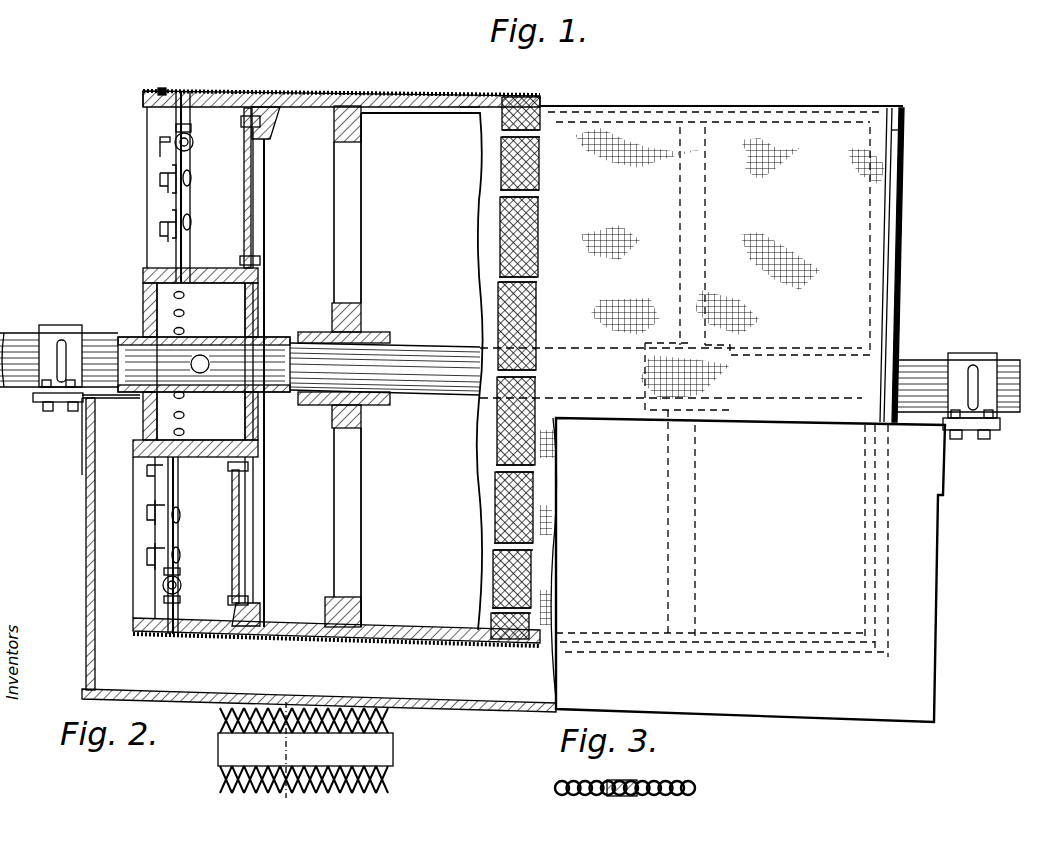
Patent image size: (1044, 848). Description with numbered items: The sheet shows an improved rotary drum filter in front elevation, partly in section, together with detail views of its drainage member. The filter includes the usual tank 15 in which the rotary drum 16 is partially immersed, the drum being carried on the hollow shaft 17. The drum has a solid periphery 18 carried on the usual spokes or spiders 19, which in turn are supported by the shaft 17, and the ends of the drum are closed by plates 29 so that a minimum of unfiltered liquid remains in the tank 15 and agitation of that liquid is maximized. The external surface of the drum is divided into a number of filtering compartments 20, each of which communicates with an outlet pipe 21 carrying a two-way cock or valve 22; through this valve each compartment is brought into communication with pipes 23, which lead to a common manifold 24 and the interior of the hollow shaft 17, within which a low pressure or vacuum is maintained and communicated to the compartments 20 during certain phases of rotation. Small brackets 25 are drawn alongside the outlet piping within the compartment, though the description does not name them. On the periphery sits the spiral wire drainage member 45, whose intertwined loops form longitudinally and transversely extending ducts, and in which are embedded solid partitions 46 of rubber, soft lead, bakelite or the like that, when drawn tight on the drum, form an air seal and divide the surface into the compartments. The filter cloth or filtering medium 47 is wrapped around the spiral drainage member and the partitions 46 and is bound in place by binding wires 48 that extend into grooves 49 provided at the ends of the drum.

In FIG. 1, the tank 15 is at (85, 540).
In FIG. 1, the rotary drum 16 is at (897, 265).
In FIG. 1, the hollow shaft 17 is at (918, 360).
In FIG. 1, the solid periphery 18 is at (422, 368).
In FIG. 1, the spokes or spiders 19 is at (360, 322).
In FIG. 1, the filtering compartments 20 is at (436, 94).
In FIG. 1, the outlet pipe 21 is at (184, 105).
In FIG. 1, the two-way cock or valve 22 is at (193, 135).
In FIG. 1, the pipes 23 is at (191, 210).
In FIG. 1, the common manifold 24 is at (142, 293).
In FIG. 1, the bracket 25 is at (160, 143).
In FIG. 1, the plates 29 is at (240, 563).
In FIG. 1, the spiral wire drainage member 45 is at (497, 512).
In FIG. 2, the spiral wire drainage member 45 is at (393, 718).
In FIG. 3, the spiral wire drainage member 45 is at (690, 780).
In FIG. 1, the solid partitions 46 is at (494, 470).
In FIG. 2, the solid partitions 46 is at (393, 760).
In FIG. 3, the solid partitions 46 is at (623, 780).
In FIG. 1, the filter cloth or filtering medium 47 is at (650, 106).
In FIG. 1, the binding wires 48 is at (163, 89).
In FIG. 1, the grooves 49 is at (145, 93).